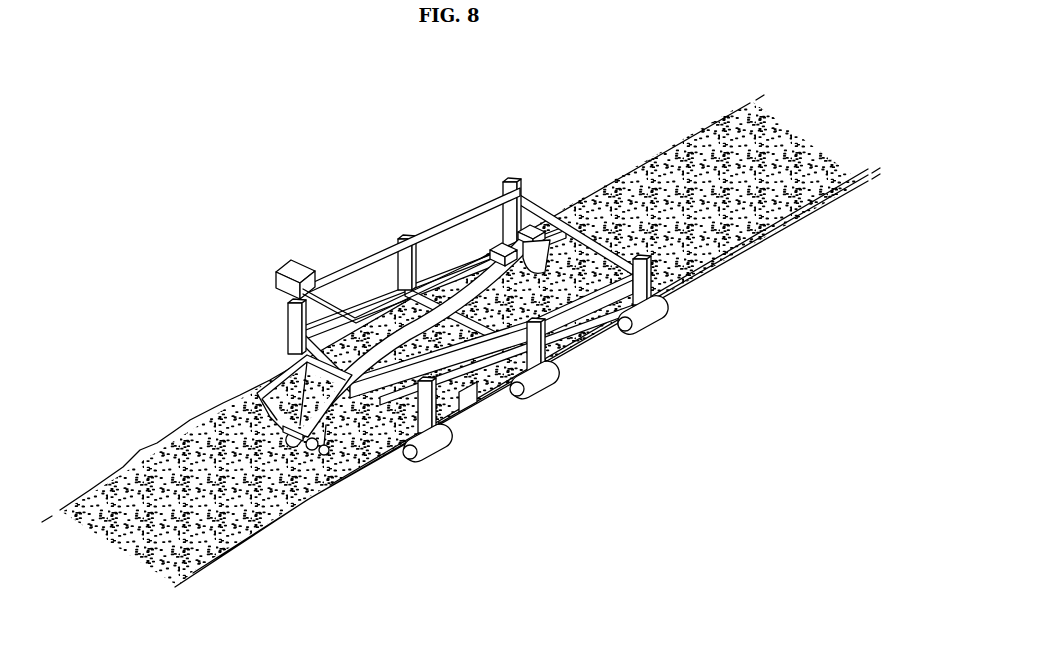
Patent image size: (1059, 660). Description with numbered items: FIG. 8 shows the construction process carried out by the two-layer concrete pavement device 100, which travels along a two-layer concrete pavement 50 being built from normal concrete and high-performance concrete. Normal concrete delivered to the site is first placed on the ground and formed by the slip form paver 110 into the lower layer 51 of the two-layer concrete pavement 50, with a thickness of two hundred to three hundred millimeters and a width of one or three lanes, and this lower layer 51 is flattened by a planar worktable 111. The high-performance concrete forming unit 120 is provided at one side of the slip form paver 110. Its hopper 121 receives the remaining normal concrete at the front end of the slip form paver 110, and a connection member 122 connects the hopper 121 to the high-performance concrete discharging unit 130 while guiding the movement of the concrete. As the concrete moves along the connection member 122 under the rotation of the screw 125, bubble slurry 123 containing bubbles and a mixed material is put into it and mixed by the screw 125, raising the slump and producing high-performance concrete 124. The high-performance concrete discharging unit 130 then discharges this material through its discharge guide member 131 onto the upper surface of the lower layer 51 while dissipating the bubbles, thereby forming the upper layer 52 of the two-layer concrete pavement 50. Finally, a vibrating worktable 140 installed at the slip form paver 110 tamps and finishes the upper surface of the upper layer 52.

The two-layer concrete pavement device 100 is at (355, 212).
The slip form paver 110 is at (580, 330).
The planar worktable 111 is at (466, 405).
The high-performance concrete forming unit 120 is at (374, 366).
The hopper 121 is at (284, 384).
The connection member 122 is at (388, 372).
The bubble slurry 123 is at (294, 270).
The high-performance concrete 124 is at (509, 183).
The screw 125 is at (488, 256).
The high-performance concrete discharging unit 130 is at (527, 230).
The discharge guide member 131 is at (546, 250).
The vibrating worktable 140 is at (617, 312).
The two-layer concrete pavement 50 is at (630, 172).
The lower layer 51 is at (727, 270).
The upper layer 52 is at (676, 188).